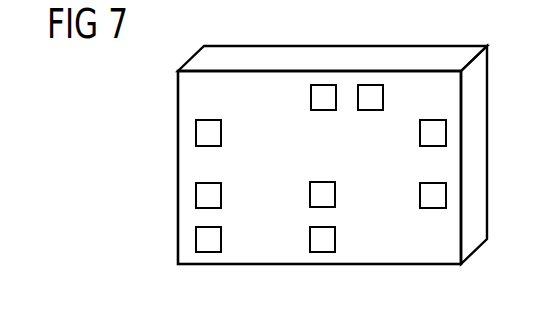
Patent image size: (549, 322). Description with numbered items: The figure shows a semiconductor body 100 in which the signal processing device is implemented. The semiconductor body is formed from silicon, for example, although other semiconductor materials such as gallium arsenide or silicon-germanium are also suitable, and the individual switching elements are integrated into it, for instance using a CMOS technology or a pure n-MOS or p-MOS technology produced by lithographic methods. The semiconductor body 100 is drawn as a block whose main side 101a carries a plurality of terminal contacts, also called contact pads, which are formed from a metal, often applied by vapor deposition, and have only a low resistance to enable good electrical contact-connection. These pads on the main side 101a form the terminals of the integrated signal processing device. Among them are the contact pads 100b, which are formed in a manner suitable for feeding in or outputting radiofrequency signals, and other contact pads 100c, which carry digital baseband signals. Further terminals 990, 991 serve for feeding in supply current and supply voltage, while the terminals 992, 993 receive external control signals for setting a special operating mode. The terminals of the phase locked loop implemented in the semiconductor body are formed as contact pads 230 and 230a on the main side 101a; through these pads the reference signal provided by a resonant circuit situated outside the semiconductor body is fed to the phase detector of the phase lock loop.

The semiconductor body 100 is at (292, 136).
The contact pads 100b is at (221, 135).
The contact pads 100c is at (221, 193).
The main side 101a is at (197, 170).
The contact pad 230 is at (323, 182).
The contact pad 230a is at (335, 238).
The terminal 990 is at (420, 131).
The terminal 991 is at (420, 195).
The external control signal terminal 992 is at (370, 85).
The external control signal terminal 993 is at (323, 85).